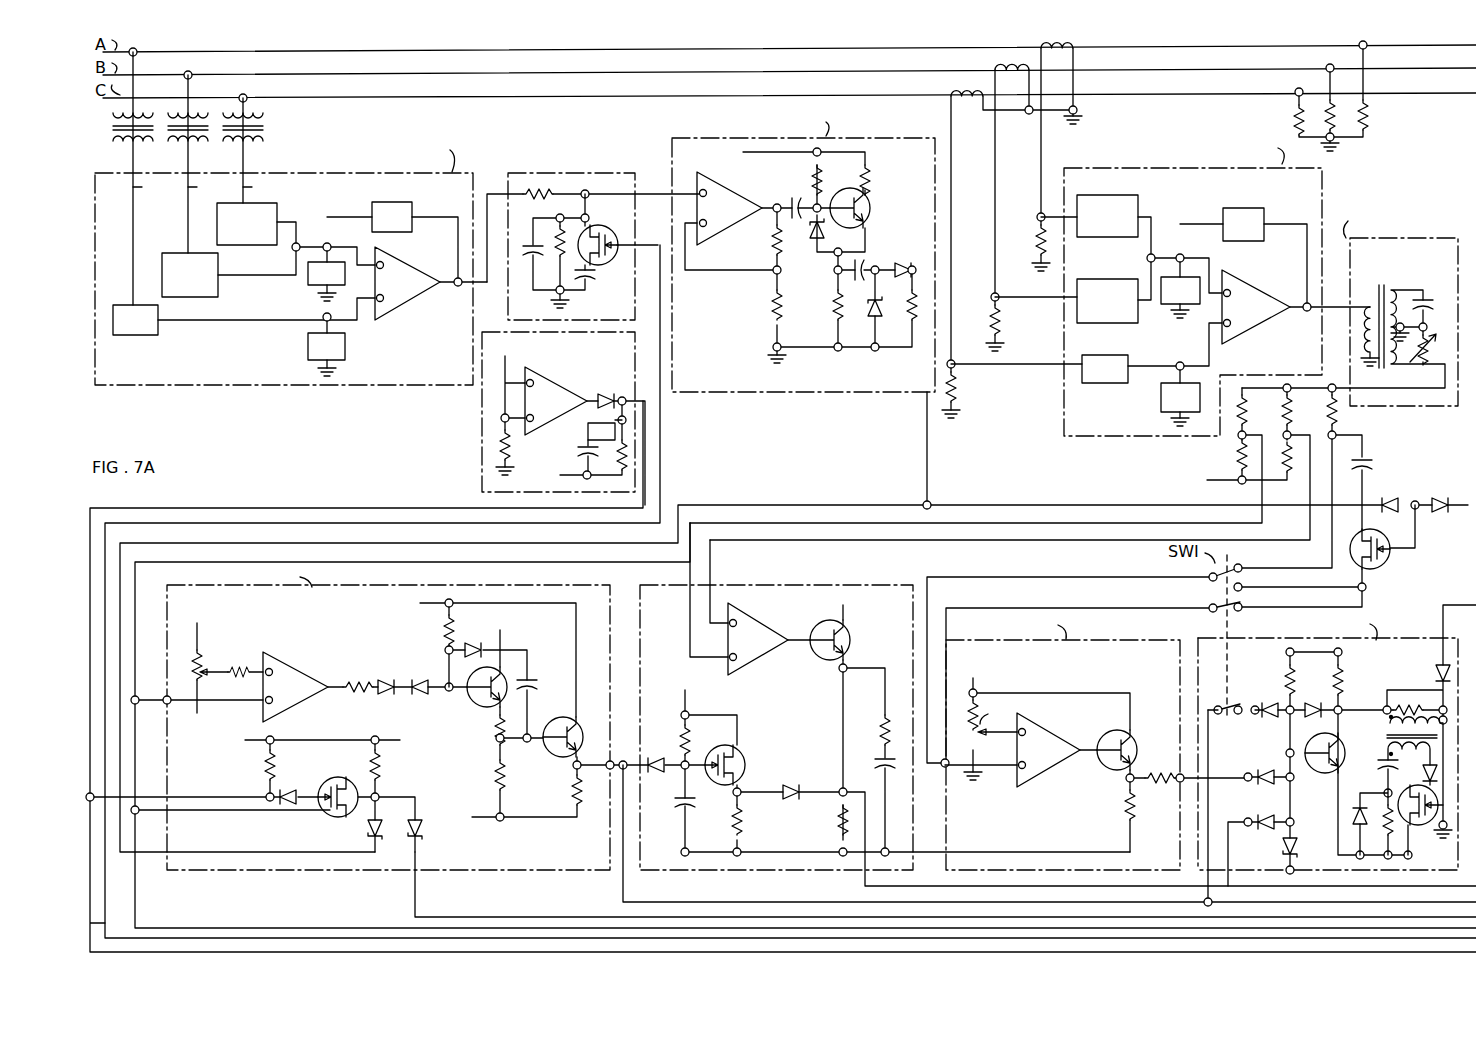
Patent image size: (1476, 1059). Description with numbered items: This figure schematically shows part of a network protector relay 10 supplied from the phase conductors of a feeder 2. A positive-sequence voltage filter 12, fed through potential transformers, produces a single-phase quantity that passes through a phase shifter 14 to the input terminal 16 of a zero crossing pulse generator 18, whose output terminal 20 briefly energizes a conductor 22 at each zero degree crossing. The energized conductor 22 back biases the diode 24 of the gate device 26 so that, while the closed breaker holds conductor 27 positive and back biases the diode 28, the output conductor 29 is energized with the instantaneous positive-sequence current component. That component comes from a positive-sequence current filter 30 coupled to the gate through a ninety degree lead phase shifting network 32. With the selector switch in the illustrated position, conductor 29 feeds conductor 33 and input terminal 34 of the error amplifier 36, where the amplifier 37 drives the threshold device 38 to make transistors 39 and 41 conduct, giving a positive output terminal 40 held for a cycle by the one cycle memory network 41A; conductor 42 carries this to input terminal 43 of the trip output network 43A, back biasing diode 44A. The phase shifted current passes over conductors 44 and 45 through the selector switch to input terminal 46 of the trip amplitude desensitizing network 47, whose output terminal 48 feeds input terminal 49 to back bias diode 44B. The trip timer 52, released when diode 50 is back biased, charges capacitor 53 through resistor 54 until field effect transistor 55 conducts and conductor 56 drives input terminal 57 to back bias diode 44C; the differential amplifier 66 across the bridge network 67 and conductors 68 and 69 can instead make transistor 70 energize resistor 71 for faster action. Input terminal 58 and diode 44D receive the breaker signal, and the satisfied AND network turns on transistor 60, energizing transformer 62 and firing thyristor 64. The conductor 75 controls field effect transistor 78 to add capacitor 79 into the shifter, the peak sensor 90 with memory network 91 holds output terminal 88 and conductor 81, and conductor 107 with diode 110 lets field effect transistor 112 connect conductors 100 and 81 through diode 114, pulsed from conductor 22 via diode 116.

The feeder 2 is at (526, 107).
The network protector relay 10 is at (1413, 174).
The positive-sequence voltage filter 12 is at (124, 174).
The phase shifter 14 is at (590, 229).
The input terminal 16 is at (626, 158).
The zero crossing pulse generator 18 is at (908, 138).
The output terminal 20 is at (928, 484).
The conductor 22 is at (855, 505).
The diode 24 is at (1395, 496).
The gate device 26 is at (1382, 520).
The conductor 27 is at (1455, 508).
The diode 28 is at (1446, 496).
The output conductor 29 is at (1366, 574).
The positive-sequence current filter 30 is at (1058, 174).
The phase shifting network 32 is at (1434, 238).
The conductor 33 is at (1160, 608).
The input terminal 34 is at (162, 695).
The error amplifier 36 is at (367, 717).
The amplifier 37 is at (295, 687).
The threshold device 38 is at (386, 677).
The transistor 39 is at (472, 706).
The output terminal 40 is at (598, 754).
The transistor 41 is at (534, 709).
The one cycle memory network 41A is at (529, 644).
The conductor 42 is at (1049, 714).
The input terminal 43 is at (1250, 715).
The trip output network 43A is at (1200, 640).
The conductor 44 is at (1009, 577).
The diode 44A is at (1270, 702).
The diode 44B is at (1268, 766).
The diode 44C is at (1268, 816).
The diode 44D is at (1298, 846).
The conductor 45 is at (1330, 556).
The input terminal 46 is at (940, 769).
The trip amplitude desensitizing network 47 is at (1081, 741).
The output terminal 48 is at (1165, 775).
The input terminal 49 is at (1246, 770).
The diode 50 is at (655, 756).
The trip timer 52 is at (728, 873).
The capacitor 53 is at (666, 807).
The resistor 54 is at (688, 746).
The field effect transistor 55 is at (746, 762).
The conductor 56 is at (858, 886).
The input terminal 57 is at (1246, 818).
The input terminal 58 is at (1337, 751).
The transistor 60 is at (1318, 777).
The transformer 62 is at (1384, 735).
The thyristor 64 is at (1436, 672).
The differential amplifier 66 is at (758, 639).
The bridge network 67 is at (1026, 476).
The conductor 68 is at (1022, 521).
The conductor 69 is at (1041, 540).
The transistor 70 is at (850, 648).
The resistor 71 is at (828, 826).
The output conductor 75 is at (658, 430).
The field effect transistor 78 is at (592, 223).
The capacitor 79 is at (592, 278).
The conductor 81 is at (105, 924).
The output terminal 88 is at (614, 394).
The peak sensor 90 is at (477, 418).
The one cycle memory network 91 is at (605, 430).
The conductor 100 is at (210, 928).
The conductor 107 is at (474, 915).
The diode 110 is at (366, 828).
The field effect transistor 112 is at (329, 786).
The diode 114 is at (285, 786).
The diode 116 is at (422, 831).